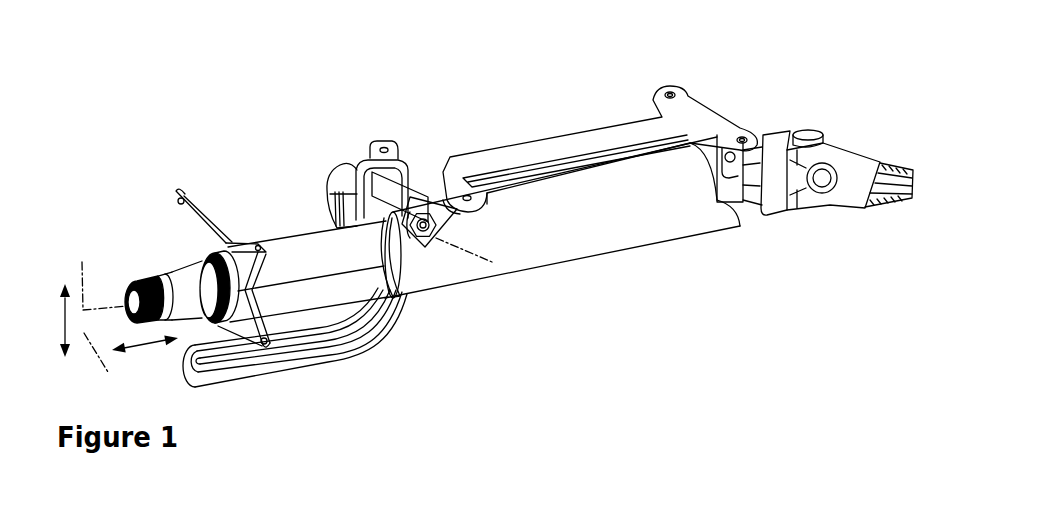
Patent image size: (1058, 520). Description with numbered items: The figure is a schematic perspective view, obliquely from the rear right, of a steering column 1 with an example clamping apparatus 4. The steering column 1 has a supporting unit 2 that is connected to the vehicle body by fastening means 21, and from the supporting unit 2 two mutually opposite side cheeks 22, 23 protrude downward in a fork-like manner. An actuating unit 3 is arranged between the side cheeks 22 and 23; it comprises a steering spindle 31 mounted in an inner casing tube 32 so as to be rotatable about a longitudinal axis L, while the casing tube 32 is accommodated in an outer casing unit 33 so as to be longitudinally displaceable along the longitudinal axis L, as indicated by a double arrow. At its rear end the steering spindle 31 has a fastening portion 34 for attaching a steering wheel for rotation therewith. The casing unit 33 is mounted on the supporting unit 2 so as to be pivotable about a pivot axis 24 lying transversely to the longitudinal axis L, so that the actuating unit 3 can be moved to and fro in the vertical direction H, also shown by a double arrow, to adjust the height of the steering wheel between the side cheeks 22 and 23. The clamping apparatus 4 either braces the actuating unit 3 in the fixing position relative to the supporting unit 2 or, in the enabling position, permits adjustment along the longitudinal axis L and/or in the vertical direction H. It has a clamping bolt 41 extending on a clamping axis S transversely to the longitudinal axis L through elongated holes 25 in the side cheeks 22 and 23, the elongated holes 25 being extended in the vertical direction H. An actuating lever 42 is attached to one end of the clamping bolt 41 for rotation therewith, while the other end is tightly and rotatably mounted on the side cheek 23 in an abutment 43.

The steering column 1 is at (574, 68).
The supporting unit 2 is at (712, 118).
The fastening means 21 is at (672, 90).
The side cheek 22 is at (378, 146).
The side cheek 23 is at (437, 200).
The pivot axis 24 is at (732, 163).
The elongated holes 25 is at (432, 209).
The actuating unit 3 is at (653, 254).
The steering spindle 31 is at (183, 290).
The inner casing tube 32 is at (302, 244).
The outer casing unit 33 is at (615, 238).
The fastening portion 34 is at (140, 285).
The clamping apparatus 4 is at (310, 160).
The clamping bolt 41 is at (430, 244).
The actuating lever 42 is at (289, 355).
The abutment 43 is at (412, 248).
The clamping axis S is at (477, 266).
The longitudinal axis L is at (94, 298).
The vertical direction H is at (131, 363).